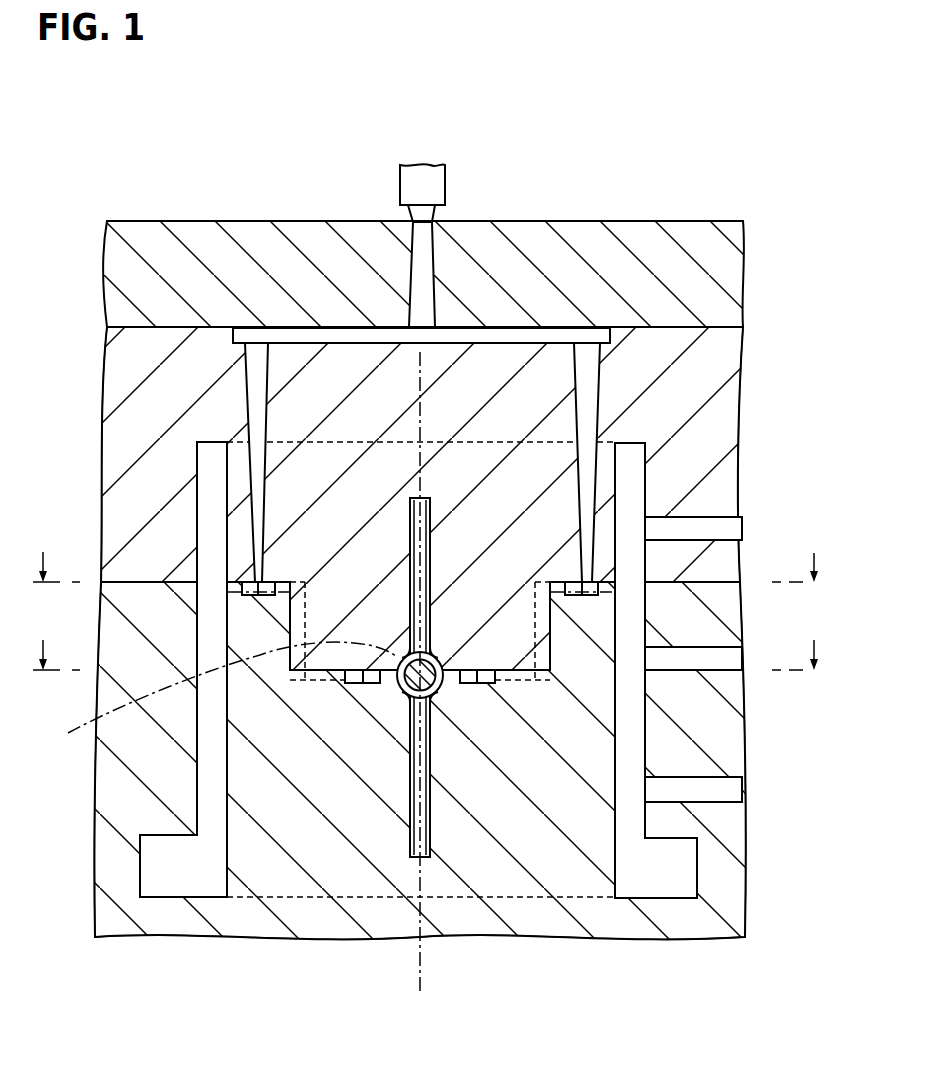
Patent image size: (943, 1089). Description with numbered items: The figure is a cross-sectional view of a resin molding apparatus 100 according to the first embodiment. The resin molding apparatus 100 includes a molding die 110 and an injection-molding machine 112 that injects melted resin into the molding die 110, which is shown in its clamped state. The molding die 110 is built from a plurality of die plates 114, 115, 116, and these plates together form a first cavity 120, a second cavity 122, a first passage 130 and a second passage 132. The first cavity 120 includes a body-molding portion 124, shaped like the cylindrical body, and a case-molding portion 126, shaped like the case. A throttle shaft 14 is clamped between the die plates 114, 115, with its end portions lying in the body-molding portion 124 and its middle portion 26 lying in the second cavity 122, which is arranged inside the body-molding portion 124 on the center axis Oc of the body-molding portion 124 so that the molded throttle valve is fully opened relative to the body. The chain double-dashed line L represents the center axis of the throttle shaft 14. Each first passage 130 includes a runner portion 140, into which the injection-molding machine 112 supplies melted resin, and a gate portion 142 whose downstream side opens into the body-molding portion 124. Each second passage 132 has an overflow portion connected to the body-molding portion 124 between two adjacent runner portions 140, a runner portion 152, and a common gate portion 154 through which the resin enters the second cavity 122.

The resin molding apparatus 100 is at (115, 180).
The molding die 110 is at (416, 635).
The injection-molding machine 112 is at (435, 181).
The die plate 114 is at (736, 688).
The die plate 115 is at (737, 429).
The die plate 116 is at (740, 295).
The first cavity 120 is at (487, 670).
The second cavity 122 is at (410, 745).
The body-molding portion 124 is at (635, 507).
The case-molding portion 126 is at (717, 514).
The first passage 130 is at (250, 575).
The second passage 132 is at (357, 686).
The runner portion 140 is at (247, 392).
The gate portion 142 is at (238, 594).
The runner portion 152 is at (290, 660).
The gate portion 154 is at (387, 683).
The throttle shaft 14 is at (447, 846).
The middle portion 26 is at (428, 697).
The center axis of the throttle shaft L is at (225, 695).
The center axis of the body-molding portion Oc is at (417, 992).